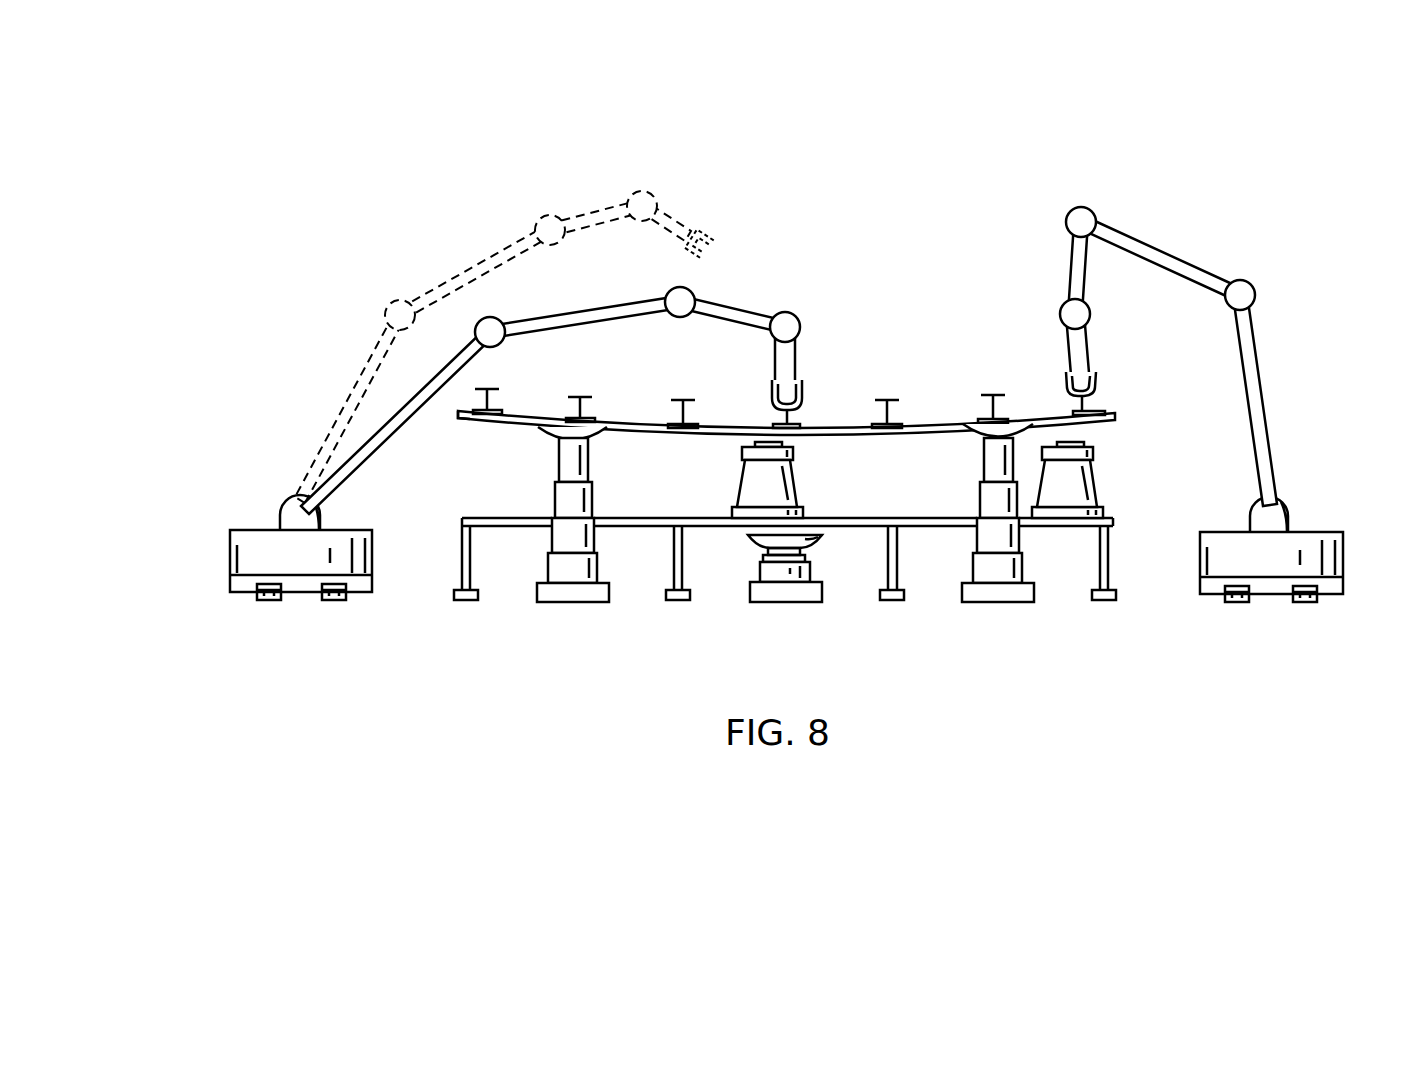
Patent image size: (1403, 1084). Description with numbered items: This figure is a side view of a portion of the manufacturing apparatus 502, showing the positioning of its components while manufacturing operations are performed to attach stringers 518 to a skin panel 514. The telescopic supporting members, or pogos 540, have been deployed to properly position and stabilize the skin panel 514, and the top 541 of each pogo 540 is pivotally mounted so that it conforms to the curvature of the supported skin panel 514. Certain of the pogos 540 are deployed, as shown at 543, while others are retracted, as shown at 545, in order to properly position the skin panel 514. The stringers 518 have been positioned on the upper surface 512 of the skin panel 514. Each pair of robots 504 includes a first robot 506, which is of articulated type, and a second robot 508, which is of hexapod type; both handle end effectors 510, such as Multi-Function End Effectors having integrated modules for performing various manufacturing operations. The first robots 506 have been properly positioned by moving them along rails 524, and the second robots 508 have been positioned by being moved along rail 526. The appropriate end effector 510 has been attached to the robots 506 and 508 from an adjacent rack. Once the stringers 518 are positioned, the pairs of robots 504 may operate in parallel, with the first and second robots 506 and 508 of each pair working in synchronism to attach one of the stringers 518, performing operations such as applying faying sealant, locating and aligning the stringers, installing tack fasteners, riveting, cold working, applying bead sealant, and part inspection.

The manufacturing apparatus 502 is at (442, 182).
The pair of robots 504 is at (923, 471).
The first robot 506 is at (786, 430).
The second robot 508 is at (788, 487).
The end effector 510 is at (803, 398).
The upper surface 512 is at (940, 424).
The skin panel 514 is at (462, 424).
The stringer 518 is at (490, 396).
The rail 524 is at (269, 602).
The rail 526 is at (523, 516).
The pogo 540 is at (553, 567).
The top of pogo 541 is at (606, 436).
The deployed pogo 543 is at (785, 552).
The retracted pogo 545 is at (770, 612).